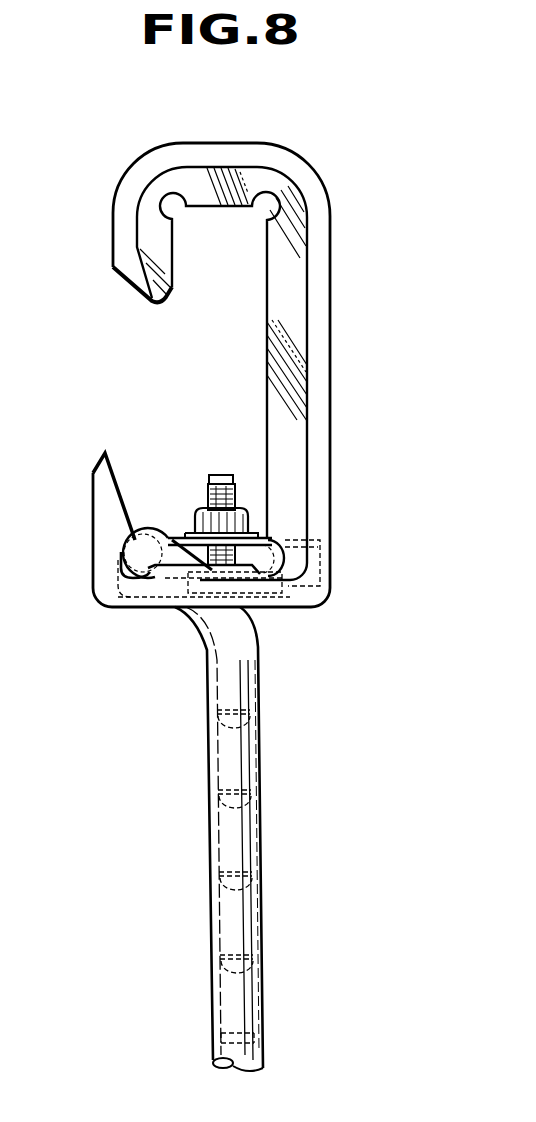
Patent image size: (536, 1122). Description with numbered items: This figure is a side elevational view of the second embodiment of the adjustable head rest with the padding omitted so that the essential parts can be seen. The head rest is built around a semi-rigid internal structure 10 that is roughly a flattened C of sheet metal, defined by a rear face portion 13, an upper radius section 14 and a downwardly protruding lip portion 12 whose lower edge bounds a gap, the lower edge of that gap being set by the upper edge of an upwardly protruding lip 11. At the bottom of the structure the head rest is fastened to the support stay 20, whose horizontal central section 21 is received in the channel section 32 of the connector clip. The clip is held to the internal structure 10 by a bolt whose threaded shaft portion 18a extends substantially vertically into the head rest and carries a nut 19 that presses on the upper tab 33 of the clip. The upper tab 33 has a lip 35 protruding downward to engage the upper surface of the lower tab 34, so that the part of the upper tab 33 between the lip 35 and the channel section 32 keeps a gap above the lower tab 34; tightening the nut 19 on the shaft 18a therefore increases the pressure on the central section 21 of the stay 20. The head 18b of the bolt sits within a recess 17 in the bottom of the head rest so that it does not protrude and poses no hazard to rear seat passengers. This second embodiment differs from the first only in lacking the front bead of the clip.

The semi-rigid internal structure 10 is at (337, 219).
The upwardly protruding lip 11 is at (103, 489).
The downwardly protruding lip portion 12 is at (115, 210).
The rear face portion 13 is at (323, 302).
The upper radius section 14 is at (170, 144).
The recess 17 is at (273, 610).
The threaded shaft portion 18a is at (203, 484).
The head 18b is at (262, 632).
The nut 19 is at (248, 520).
The support stay 20 is at (200, 696).
The central section 21 is at (254, 697).
The channel section 32 is at (158, 526).
The upper tab 33 is at (268, 537).
The lower tab 34 is at (258, 583).
The lip 35 is at (300, 542).